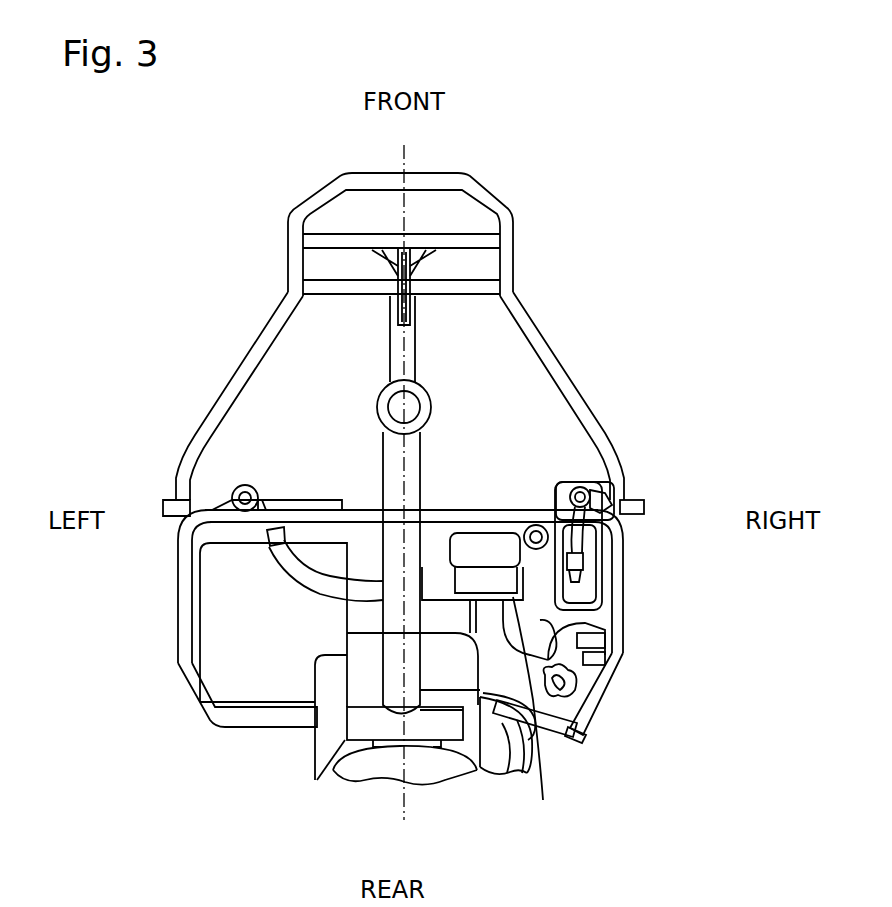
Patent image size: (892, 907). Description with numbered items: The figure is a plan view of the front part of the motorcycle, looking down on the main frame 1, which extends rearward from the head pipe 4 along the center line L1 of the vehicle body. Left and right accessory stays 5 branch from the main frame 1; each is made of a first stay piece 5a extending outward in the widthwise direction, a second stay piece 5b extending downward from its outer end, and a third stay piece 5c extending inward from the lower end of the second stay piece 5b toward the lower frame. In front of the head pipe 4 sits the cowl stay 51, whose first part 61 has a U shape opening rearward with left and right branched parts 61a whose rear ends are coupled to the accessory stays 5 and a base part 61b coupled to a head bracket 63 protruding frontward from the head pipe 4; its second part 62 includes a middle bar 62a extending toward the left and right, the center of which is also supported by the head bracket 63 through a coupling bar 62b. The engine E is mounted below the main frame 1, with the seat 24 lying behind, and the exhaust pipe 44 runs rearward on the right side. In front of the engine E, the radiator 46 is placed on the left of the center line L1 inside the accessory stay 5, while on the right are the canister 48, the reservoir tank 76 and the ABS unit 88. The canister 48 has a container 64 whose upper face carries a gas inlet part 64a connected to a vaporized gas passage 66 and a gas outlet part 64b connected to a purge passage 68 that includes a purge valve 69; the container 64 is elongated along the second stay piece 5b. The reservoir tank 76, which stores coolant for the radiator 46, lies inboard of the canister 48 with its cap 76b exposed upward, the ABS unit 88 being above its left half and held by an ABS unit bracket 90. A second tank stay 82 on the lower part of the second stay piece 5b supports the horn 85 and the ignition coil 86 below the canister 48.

The main frame 1 is at (384, 458).
The head pipe 4 is at (427, 406).
The accessory stay 5 is at (413, 611).
The first stay piece 5a is at (470, 510).
The second stay piece 5b is at (622, 615).
The third stay piece 5c is at (560, 718).
The seat 24 is at (372, 770).
The exhaust pipe 44 is at (510, 768).
The radiator 46 is at (222, 607).
The canister 48 is at (575, 480).
The cowl stay 51 is at (593, 168).
The first part 61 is at (395, 370).
The branched part 61a is at (219, 402).
The base part 61b is at (453, 297).
The second part 62 is at (395, 234).
The middle bar 62a is at (334, 208).
The coupling bar 62b is at (394, 282).
The head bracket 63 is at (397, 358).
The container 64 is at (590, 567).
The gas inlet part 64a is at (593, 487).
The gas outlet part 64b is at (560, 492).
The vaporized gas passage 66 is at (598, 503).
The purge passage 68 is at (645, 507).
The purge valve 69 is at (585, 572).
The reservoir tank 76 is at (560, 680).
The cap 76b is at (525, 527).
The second tank stay 82 is at (558, 660).
The horn 85 is at (592, 633).
The ignition coil 86 is at (570, 693).
The ABS unit 88 is at (458, 540).
The ABS unit bracket 90 is at (537, 714).
The engine E is at (318, 748).
The center line L1 is at (412, 793).